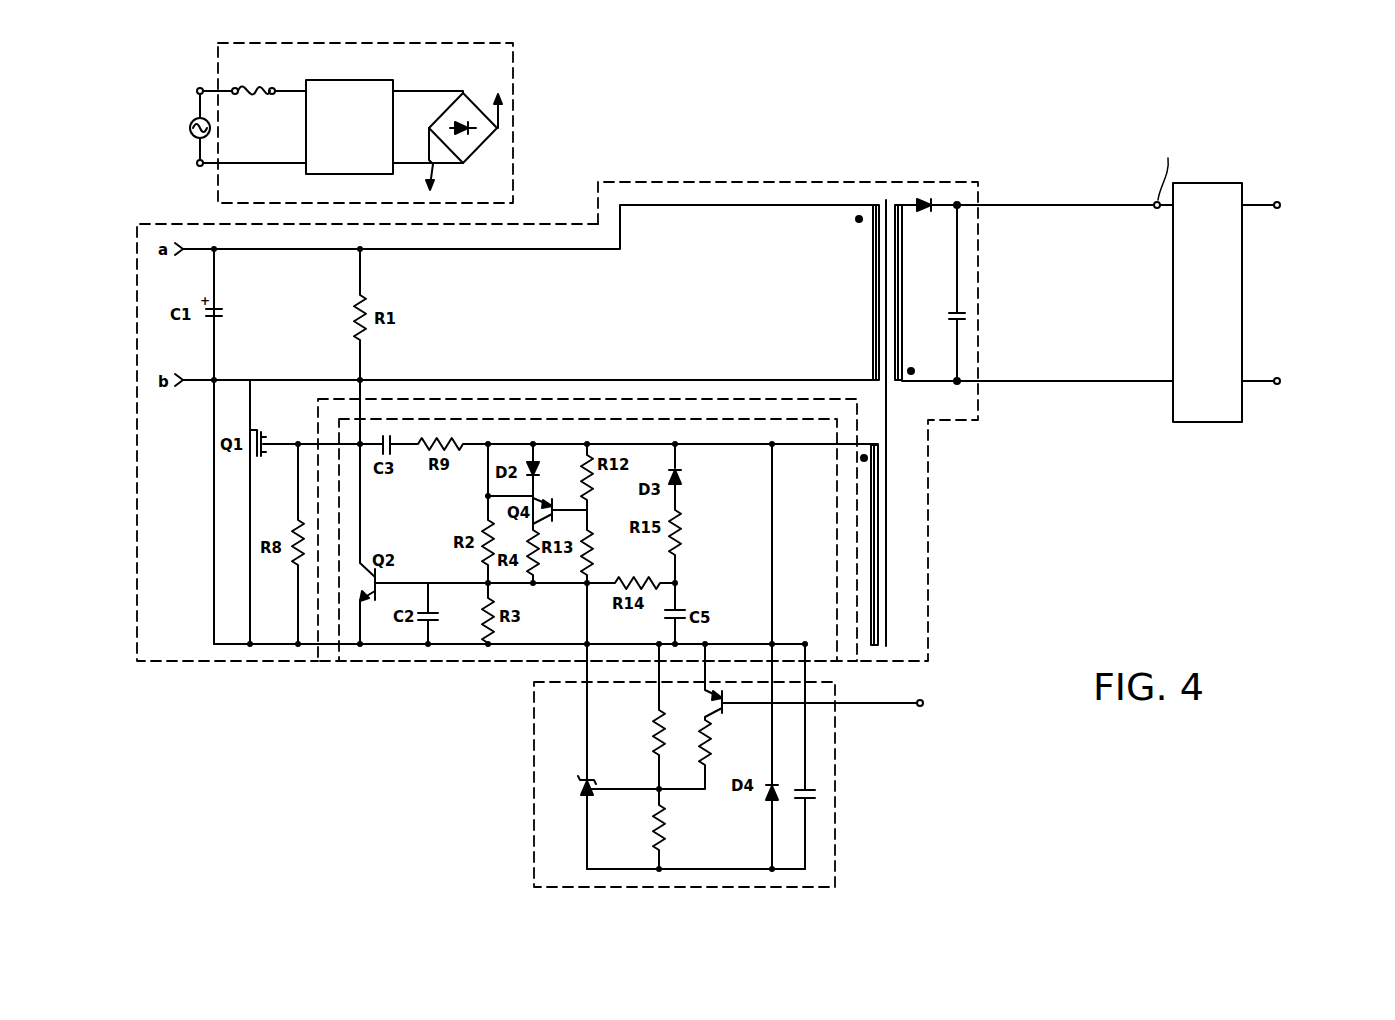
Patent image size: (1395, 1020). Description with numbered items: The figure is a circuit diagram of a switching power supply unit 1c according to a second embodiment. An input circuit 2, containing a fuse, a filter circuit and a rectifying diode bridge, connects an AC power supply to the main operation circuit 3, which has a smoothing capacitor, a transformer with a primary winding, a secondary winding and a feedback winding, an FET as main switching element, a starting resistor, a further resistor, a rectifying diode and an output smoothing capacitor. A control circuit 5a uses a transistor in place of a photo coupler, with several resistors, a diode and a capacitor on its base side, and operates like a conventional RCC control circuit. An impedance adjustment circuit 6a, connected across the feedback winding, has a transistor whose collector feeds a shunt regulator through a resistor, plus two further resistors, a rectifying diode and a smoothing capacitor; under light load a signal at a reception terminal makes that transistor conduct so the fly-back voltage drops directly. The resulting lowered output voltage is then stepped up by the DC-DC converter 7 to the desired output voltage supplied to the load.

The input circuit 2 is at (497, 173).
The main operation circuit 3 is at (731, 183).
The switching power supply unit 1c is at (1023, 181).
The DC-DC converter 7 is at (1206, 190).
The control circuit 5a is at (477, 668).
The impedance adjustment circuit 6a is at (545, 851).